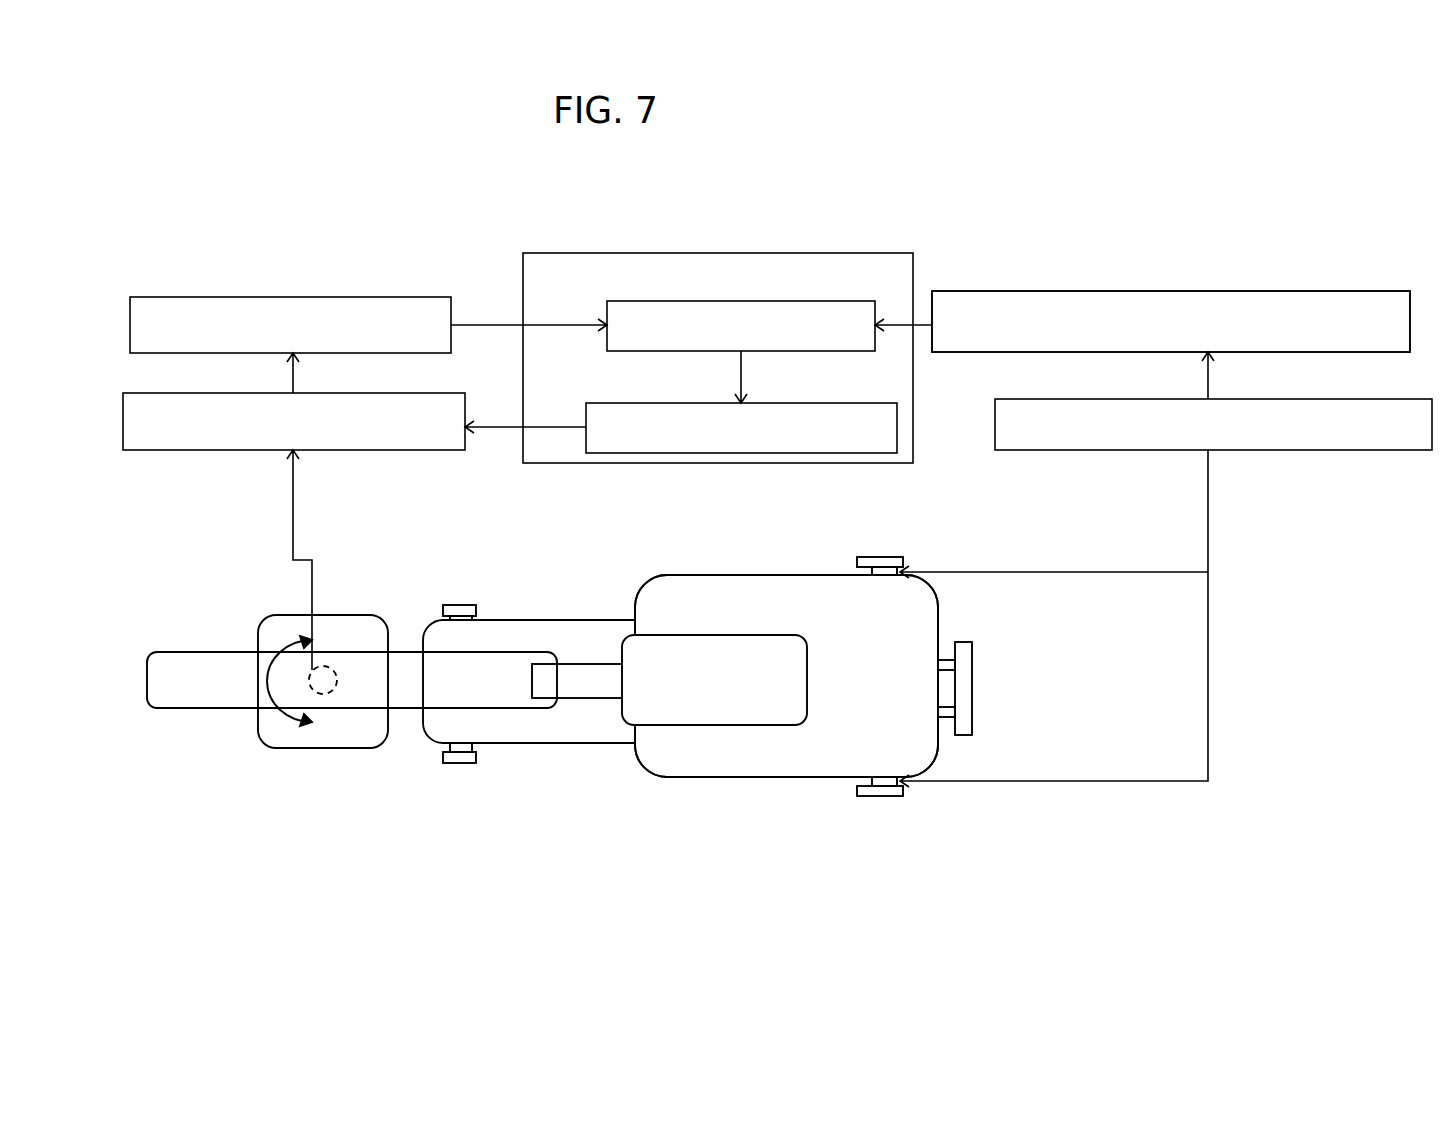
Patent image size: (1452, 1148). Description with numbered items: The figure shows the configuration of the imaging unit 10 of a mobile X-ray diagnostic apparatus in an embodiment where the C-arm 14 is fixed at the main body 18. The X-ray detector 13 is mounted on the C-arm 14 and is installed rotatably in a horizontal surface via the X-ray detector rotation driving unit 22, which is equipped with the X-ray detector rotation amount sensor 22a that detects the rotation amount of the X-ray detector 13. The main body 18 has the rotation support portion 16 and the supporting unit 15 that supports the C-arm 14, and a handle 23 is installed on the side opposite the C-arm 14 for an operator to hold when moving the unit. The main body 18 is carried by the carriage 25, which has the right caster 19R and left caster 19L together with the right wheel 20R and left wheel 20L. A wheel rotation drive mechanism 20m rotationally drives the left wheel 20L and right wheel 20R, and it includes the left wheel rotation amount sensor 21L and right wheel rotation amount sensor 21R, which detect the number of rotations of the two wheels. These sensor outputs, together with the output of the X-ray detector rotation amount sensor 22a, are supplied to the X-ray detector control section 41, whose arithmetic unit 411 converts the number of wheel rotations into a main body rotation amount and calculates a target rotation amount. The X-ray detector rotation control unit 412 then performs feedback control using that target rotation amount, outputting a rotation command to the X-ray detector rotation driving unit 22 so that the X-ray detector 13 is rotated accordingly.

The imaging unit 10 is at (720, 775).
The X-ray detector 13 is at (348, 615).
The C-arm 14 is at (190, 650).
The supporting unit 15 is at (552, 660).
The rotation support portion 16 is at (662, 632).
The main body 18 is at (717, 603).
The right caster 19R is at (457, 603).
The left caster 19L is at (458, 763).
The right wheel 20R is at (875, 556).
The left wheel 20L is at (875, 790).
The wheel rotation drive mechanism 20m is at (1323, 453).
The left wheel rotation amount sensor 21L is at (1197, 290).
The right wheel rotation amount sensor 21R is at (1171, 321).
The X-ray detector rotation driving unit 22 is at (217, 450).
The X-ray detector rotation amount sensor 22a is at (320, 297).
The handle 23 is at (965, 698).
The carriage 25 is at (582, 730).
The X-ray detector control section 41 is at (580, 253).
The arithmetic unit 411 is at (793, 301).
The X-ray detector rotation control unit 412 is at (690, 453).